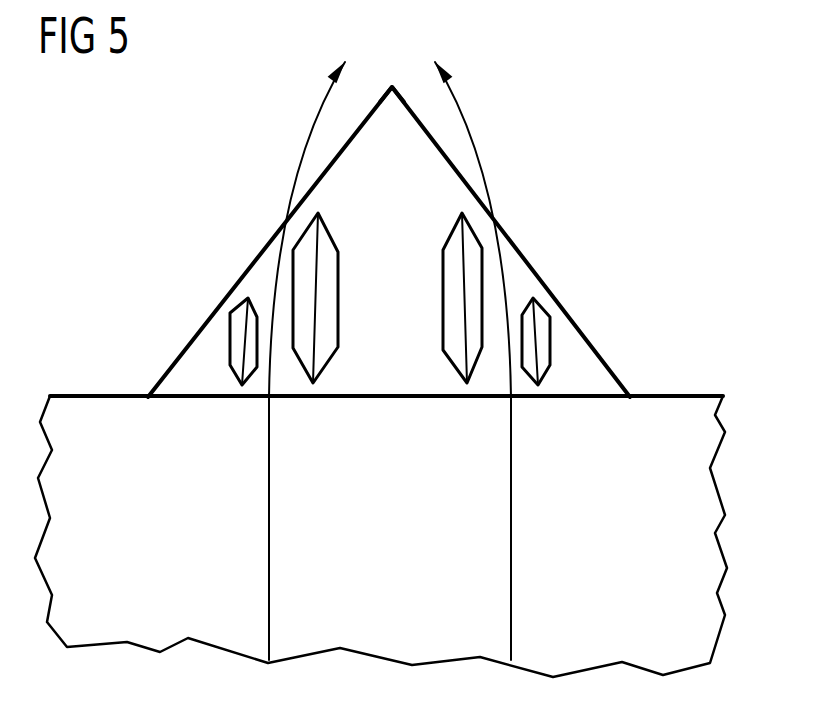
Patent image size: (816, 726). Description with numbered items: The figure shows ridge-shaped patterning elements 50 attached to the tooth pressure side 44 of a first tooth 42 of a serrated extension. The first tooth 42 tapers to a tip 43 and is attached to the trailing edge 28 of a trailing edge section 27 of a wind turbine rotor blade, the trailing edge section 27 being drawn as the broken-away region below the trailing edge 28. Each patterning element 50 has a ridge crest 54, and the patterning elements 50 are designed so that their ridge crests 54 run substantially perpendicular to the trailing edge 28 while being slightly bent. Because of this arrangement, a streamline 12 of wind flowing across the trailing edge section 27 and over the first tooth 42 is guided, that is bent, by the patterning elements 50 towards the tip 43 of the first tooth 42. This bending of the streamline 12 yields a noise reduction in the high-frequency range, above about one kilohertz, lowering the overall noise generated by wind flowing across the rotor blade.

The streamline 12 is at (313, 122).
The trailing edge section 27 is at (703, 523).
The trailing edge 28 is at (386, 395).
The first tooth 42 is at (403, 204).
The tip 43 is at (392, 86).
The tooth pressure side 44 is at (390, 383).
The patterning element 50 is at (392, 331).
The ridge crest 54 is at (241, 343).